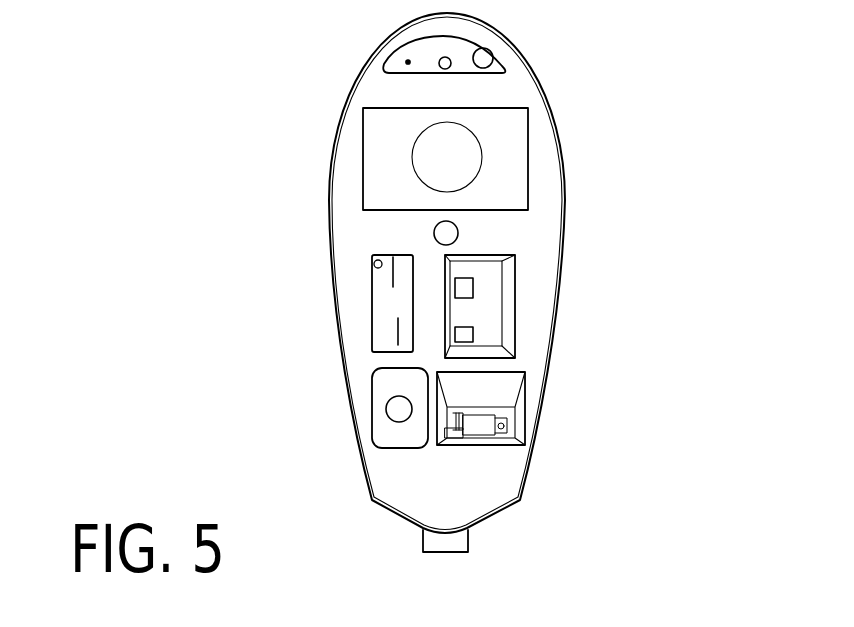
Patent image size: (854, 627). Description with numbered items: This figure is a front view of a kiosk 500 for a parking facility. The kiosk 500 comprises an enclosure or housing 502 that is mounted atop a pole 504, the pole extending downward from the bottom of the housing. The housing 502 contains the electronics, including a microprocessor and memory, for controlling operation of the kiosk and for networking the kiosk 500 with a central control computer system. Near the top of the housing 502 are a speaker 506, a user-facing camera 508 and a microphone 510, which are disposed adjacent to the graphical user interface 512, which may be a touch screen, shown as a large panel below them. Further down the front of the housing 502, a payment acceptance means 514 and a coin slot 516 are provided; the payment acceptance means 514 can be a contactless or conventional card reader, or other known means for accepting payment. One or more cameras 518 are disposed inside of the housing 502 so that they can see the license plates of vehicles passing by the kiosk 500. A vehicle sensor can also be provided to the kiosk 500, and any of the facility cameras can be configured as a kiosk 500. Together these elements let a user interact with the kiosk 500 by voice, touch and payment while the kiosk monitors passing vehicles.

The kiosk 500 is at (330, 246).
The housing 502 is at (360, 317).
The pole 504 is at (455, 543).
The speaker 506 is at (493, 58).
The user-facing camera 508 is at (450, 66).
The microphone 510 is at (408, 62).
The graphical user interface 512 is at (507, 175).
The payment acceptance means 514 is at (482, 307).
The coin slot 516 is at (392, 278).
The cameras 518 is at (382, 413).